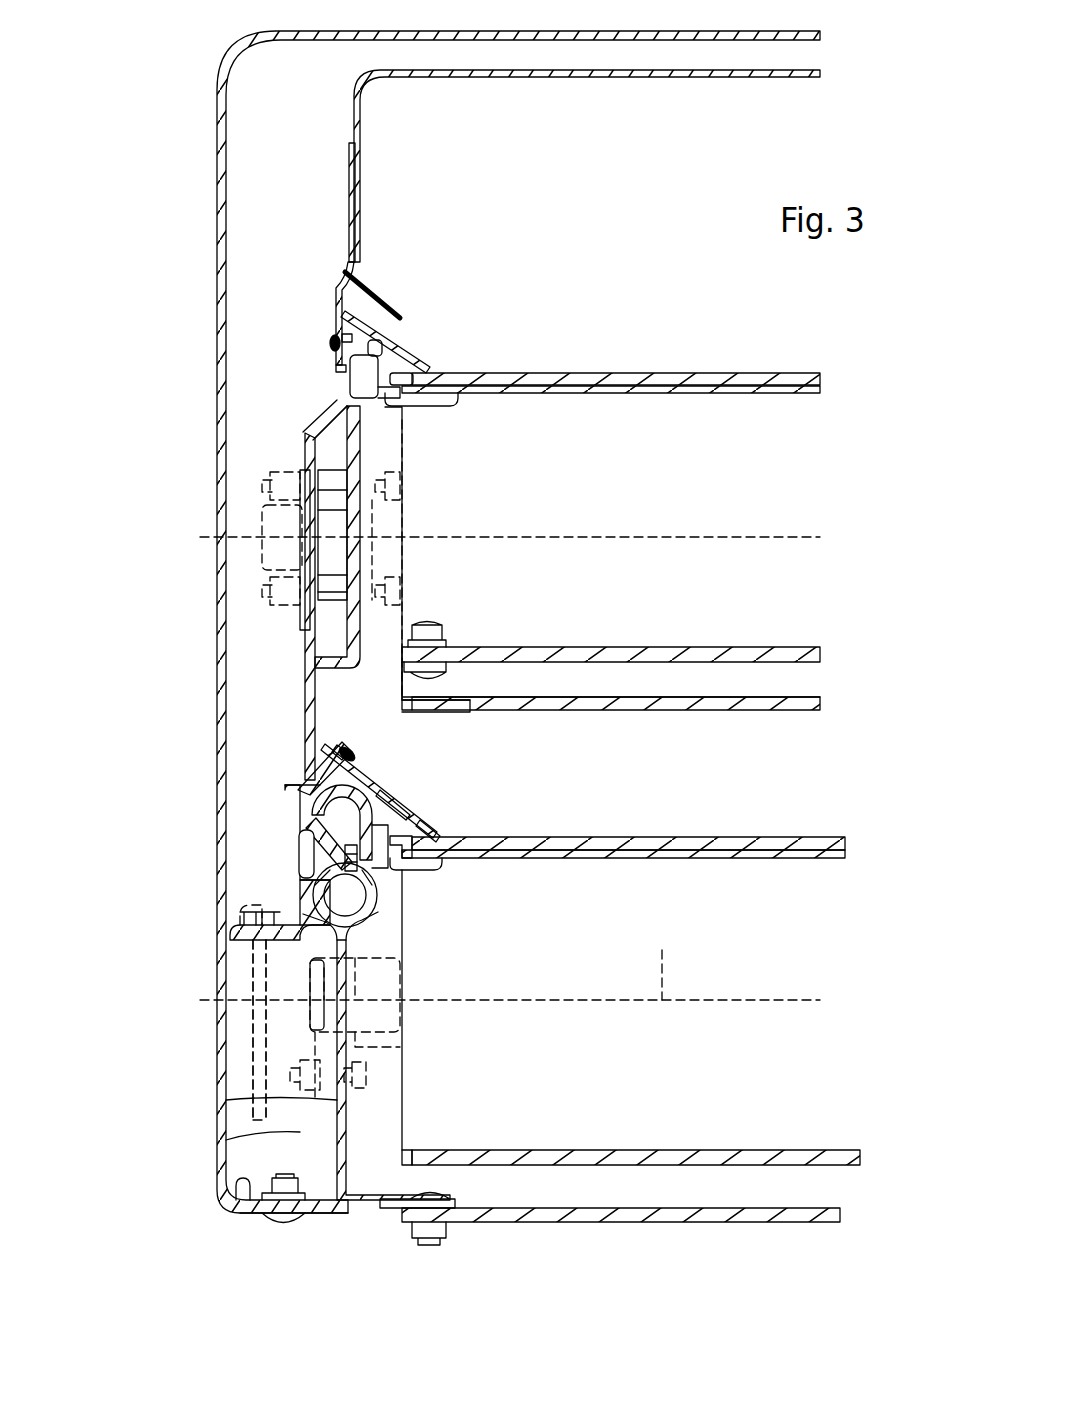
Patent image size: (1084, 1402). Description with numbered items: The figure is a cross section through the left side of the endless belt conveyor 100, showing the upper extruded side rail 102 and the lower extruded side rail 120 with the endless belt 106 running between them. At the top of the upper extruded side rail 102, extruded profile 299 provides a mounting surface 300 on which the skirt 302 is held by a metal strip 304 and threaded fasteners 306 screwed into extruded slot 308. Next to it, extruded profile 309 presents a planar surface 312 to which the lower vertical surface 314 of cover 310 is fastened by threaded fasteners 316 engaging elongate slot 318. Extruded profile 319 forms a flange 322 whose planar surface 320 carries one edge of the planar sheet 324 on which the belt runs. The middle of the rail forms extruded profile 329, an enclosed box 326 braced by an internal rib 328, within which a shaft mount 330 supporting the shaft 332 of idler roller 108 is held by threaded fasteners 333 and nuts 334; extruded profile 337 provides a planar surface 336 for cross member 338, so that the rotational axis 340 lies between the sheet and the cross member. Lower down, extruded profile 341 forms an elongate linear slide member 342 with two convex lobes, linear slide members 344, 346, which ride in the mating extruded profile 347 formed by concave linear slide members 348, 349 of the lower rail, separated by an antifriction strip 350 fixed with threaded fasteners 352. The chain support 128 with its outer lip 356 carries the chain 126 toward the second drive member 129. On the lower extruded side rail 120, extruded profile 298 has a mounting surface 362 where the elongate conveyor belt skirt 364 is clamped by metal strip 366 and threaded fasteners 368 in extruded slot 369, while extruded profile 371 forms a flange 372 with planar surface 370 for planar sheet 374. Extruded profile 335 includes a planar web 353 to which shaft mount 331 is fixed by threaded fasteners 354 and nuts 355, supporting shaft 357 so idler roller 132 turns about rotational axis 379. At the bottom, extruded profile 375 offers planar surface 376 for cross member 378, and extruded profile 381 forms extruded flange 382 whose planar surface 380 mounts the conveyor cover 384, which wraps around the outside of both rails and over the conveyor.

The endless belt conveyor 100 is at (180, 702).
The upper extruded side rail 102 is at (332, 392).
The endless belt 106 is at (626, 372).
The idler roller 108 is at (395, 495).
The lower extruded side rail 120 is at (302, 1135).
The chain 126 is at (248, 905).
The chain support 128 is at (262, 872).
The second drive member 129 is at (260, 1036).
The idler roller 132 is at (610, 393).
The extruded profile 298 is at (420, 718).
The extruded profile 299 is at (405, 300).
The mounting surface 300 is at (405, 340).
The skirt 302 is at (425, 357).
The metal strip 304 is at (398, 300).
The threaded fasteners 306 is at (398, 325).
The extruded slot 308 is at (330, 346).
The extruded profile 309 is at (308, 318).
The cover 310 is at (420, 72).
The planar surface 312 is at (336, 310).
The lower vertical surface 314 is at (334, 298).
The threaded fasteners 316 is at (334, 322).
The elongate slot 318 is at (368, 298).
The extruded profile 319 is at (470, 408).
The planar surface 320 is at (432, 372).
The flange 322 is at (455, 402).
The planar sheet 324 is at (680, 388).
The enclosed box 326 is at (322, 440).
The internal rib 328 is at (302, 448).
The extruded profile 329 is at (250, 572).
The shaft mount 330 is at (312, 628).
The shaft mount 331 is at (340, 1100).
The shaft 332 is at (400, 505).
The threaded fasteners 333 is at (268, 482).
The nuts 334 is at (395, 475).
The extruded profile 335 is at (292, 990).
The planar surface 336 is at (448, 645).
The extruded profile 337 is at (432, 614).
The cross member 338 is at (600, 647).
The rotational axis 340 is at (262, 520).
The extruded profile 341 is at (262, 815).
The elongate linear slide member 342 is at (278, 845).
The linear slide member 344 is at (330, 772).
The linear slide member 346 is at (362, 902).
The extruded profile 347 is at (455, 822).
The linear slide member 348 is at (318, 775).
The linear slide member 349 is at (395, 958).
The antifriction strip 350 is at (385, 900).
The threaded fasteners 352 is at (380, 875).
The planar web 353 is at (378, 1042).
The threaded fasteners 354 is at (238, 950).
The nuts 355 is at (398, 1148).
The outer lip 356 is at (240, 920).
The shaft 357 is at (355, 1002).
The mounting surface 362 is at (405, 790).
The elongate conveyor belt skirt 364 is at (412, 812).
The metal strip 366 is at (378, 746).
The threaded fasteners 368 is at (350, 745).
The extruded slot 369 is at (320, 755).
The planar surface 370 is at (440, 833).
The extruded profile 371 is at (505, 868).
The flange 372 is at (440, 866).
The planar sheet 374 is at (720, 852).
The extruded profile 375 is at (440, 1168).
The planar surface 376 is at (395, 1170).
The cross member 378 is at (638, 1208).
The rotational axis 379 is at (664, 950).
The planar surface 380 is at (270, 1208).
The extruded profile 381 is at (222, 1214).
The extruded flange 382 is at (236, 1192).
The conveyor cover 384 is at (350, 31).